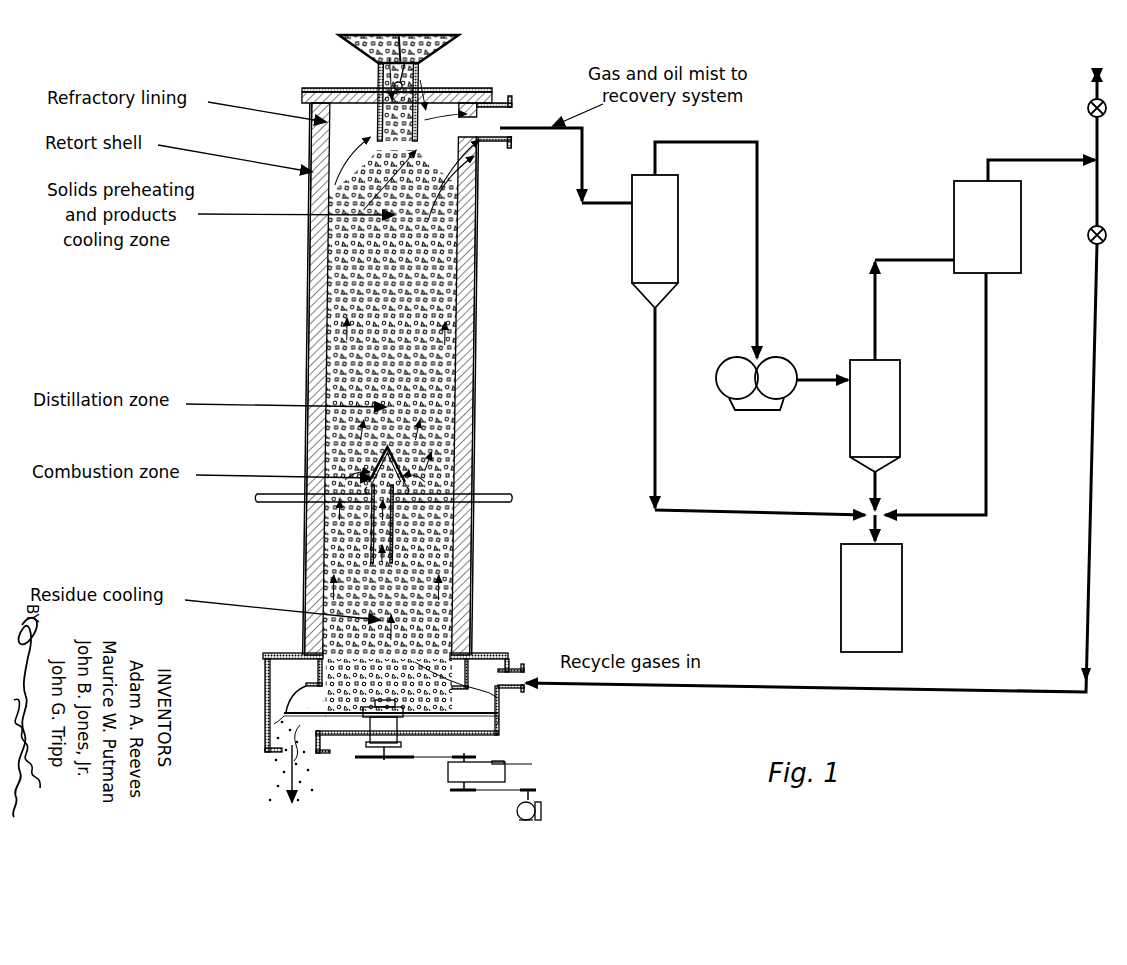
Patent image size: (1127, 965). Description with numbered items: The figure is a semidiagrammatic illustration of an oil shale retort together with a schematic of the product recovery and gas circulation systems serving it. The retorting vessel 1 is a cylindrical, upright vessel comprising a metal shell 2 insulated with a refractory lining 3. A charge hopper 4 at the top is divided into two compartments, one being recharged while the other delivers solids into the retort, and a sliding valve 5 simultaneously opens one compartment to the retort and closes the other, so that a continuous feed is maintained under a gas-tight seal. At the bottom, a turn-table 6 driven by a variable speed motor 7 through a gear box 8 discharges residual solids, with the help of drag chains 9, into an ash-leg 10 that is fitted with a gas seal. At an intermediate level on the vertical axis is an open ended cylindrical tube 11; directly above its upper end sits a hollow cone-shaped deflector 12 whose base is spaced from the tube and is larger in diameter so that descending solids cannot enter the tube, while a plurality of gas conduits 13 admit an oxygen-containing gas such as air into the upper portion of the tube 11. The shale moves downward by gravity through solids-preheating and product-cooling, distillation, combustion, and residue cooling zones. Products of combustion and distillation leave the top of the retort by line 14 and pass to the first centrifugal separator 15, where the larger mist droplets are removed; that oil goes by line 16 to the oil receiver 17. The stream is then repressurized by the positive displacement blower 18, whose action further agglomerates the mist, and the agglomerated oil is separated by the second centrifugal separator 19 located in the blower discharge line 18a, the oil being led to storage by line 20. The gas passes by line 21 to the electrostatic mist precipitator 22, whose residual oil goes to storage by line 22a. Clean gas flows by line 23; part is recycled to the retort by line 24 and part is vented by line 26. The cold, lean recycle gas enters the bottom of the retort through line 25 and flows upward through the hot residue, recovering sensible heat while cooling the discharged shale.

The retorting vessel 1 is at (392, 345).
The metal shell 2 is at (317, 153).
The refractory lining 3 is at (319, 118).
The charge hopper 4 is at (377, 58).
The sliding valve 5 is at (406, 62).
The turn-table 6 is at (288, 712).
The variable speed motor 7 is at (516, 812).
The gear box 8 is at (505, 763).
The drag chains 9 is at (284, 718).
The ash-leg 10 is at (268, 748).
The cylindrical tube 11 is at (407, 548).
The cone-shaped deflector 12 is at (413, 442).
The gas conduits 13 is at (290, 503).
The line 14 is at (582, 166).
The centrifugal separator 15 is at (632, 250).
The line 16 is at (654, 380).
The oil receiver 17 is at (902, 552).
The positive displacement blower 18 is at (732, 358).
The blower discharge line 18a is at (826, 384).
The centrifugal separator 19 is at (900, 418).
The line 20 is at (874, 486).
The line 21 is at (875, 302).
The electrostatic mist precipitator 22 is at (954, 210).
The line 22a is at (986, 332).
The line 23 is at (1024, 160).
The line 24 is at (1096, 320).
The line 25 is at (508, 680).
The line 26 is at (1094, 98).